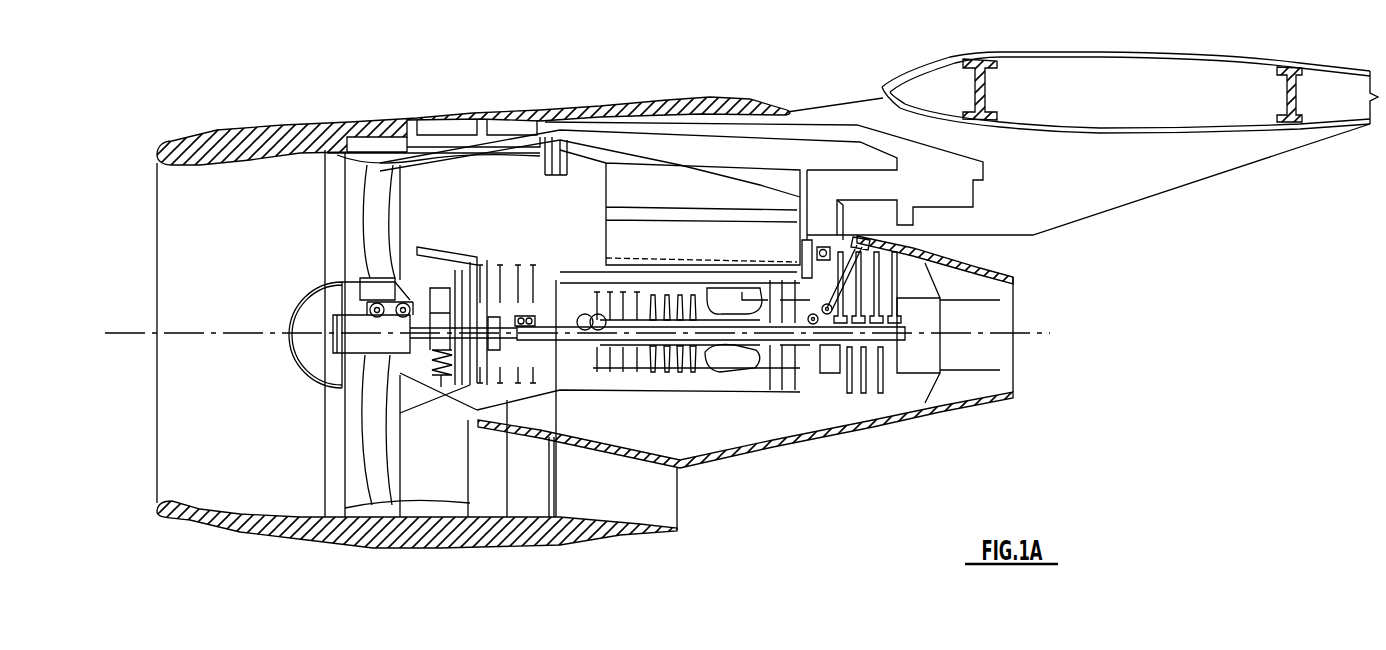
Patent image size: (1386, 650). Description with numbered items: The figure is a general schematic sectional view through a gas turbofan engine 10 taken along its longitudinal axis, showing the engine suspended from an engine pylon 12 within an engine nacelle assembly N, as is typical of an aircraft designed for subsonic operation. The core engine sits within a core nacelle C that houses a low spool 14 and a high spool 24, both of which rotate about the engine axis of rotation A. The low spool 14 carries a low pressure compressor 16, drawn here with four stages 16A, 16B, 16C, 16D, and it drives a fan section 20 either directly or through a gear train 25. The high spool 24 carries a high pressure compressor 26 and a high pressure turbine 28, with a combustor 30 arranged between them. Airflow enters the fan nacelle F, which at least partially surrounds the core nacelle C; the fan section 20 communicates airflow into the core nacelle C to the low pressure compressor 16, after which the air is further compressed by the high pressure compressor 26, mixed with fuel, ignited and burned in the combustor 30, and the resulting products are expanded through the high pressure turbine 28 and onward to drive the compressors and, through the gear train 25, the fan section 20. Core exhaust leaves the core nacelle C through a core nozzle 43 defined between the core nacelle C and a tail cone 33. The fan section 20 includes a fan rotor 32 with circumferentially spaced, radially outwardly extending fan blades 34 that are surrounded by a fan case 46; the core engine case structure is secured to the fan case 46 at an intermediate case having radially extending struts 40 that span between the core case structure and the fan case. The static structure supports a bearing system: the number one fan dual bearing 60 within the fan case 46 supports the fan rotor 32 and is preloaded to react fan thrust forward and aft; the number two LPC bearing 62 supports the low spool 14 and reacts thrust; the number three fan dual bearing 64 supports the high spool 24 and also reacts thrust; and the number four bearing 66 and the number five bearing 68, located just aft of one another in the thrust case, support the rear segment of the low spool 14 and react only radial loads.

The gas turbofan engine 10 is at (845, 125).
The engine pylon 12 is at (520, 302).
The low spool 14 is at (652, 373).
The low pressure compressor 16 is at (633, 227).
The low pressure compressor stage 16A is at (442, 299).
The low pressure compressor stage 16B is at (448, 341).
The low pressure compressor stage 16C is at (652, 207).
The low pressure compressor stage 16D is at (668, 246).
The fan section 20 is at (401, 470).
The high spool 24 is at (697, 372).
The gear train 25 is at (456, 377).
The high pressure compressor 26 is at (694, 363).
The high pressure turbine 28 is at (851, 354).
The combustor 30 is at (857, 389).
The fan rotor 32 is at (336, 361).
The tail cone 33 is at (960, 333).
The fan blades 34 is at (329, 333).
The struts 40 is at (447, 129).
The core nozzle 43 is at (1014, 334).
The fan case 46 is at (548, 493).
The #1 fan dual bearing 60 is at (307, 282).
The #2 LPC bearing 62 is at (580, 398).
The #3 fan dual bearing 64 is at (585, 356).
The #4 bearing 66 is at (895, 384).
The #5 bearing 68 is at (960, 296).
The engine axis of rotation A is at (594, 353).
The core nacelle C is at (745, 378).
The fan nacelle F is at (300, 565).
The engine nacelle assembly N is at (573, 583).